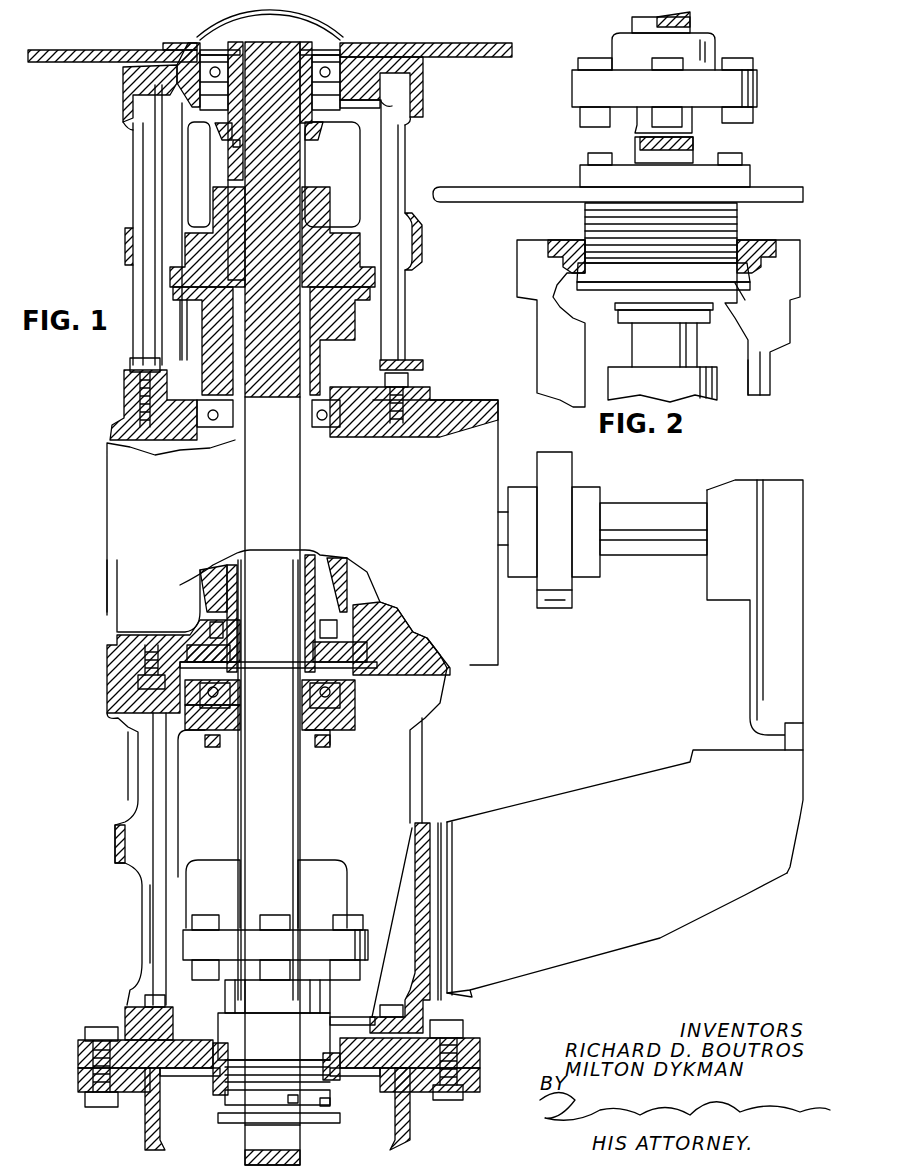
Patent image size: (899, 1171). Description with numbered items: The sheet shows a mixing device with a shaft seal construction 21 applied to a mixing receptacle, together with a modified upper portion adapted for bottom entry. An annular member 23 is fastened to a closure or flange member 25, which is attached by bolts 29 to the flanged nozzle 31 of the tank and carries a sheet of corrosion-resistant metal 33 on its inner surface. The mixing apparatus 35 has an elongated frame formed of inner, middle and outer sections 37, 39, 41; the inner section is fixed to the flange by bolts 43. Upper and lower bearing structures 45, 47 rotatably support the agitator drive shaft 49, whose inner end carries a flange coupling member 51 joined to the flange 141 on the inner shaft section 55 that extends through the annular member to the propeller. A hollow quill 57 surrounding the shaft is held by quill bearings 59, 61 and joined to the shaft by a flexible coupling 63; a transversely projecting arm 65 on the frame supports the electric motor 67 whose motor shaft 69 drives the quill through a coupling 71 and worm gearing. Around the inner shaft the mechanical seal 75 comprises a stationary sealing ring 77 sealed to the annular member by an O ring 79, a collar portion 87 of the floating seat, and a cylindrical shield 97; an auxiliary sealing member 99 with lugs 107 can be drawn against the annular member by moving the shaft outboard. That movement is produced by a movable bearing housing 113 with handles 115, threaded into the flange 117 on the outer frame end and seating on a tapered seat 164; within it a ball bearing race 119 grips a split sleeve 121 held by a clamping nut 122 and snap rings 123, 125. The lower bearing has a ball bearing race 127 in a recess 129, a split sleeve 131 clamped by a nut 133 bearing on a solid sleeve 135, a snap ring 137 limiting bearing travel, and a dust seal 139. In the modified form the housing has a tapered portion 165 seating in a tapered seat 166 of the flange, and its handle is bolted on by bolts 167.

In FIG. 1, the shaft seal construction 21 is at (203, 1093).
In FIG. 1, the annular member 23 is at (338, 1095).
In FIG. 1, the closure or flange member 25 is at (465, 1045).
In FIG. 1, the bolts 29 is at (85, 1033).
In FIG. 1, the flanged nozzle 31 is at (465, 1080).
In FIG. 1, the sheet of corrosion-resistant metal 33 is at (380, 1076).
In FIG. 1, the mixing apparatus 35 is at (438, 385).
In FIG. 1, the inner frame section 37 is at (136, 780).
In FIG. 1, the middle frame section 39 is at (105, 505).
In FIG. 1, the outer frame section 41 is at (132, 150).
In FIG. 2, the outer frame section 41 is at (765, 345).
In FIG. 1, the bolts 43 is at (142, 1010).
In FIG. 1, the upper bearing structure 45 is at (333, 116).
In FIG. 1, the lower bearing structure 47 is at (219, 753).
In FIG. 1, the agitator drive shaft 49 is at (240, 800).
In FIG. 2, the agitator drive shaft 49 is at (695, 158).
In FIG. 1, the flange coupling member 51 is at (236, 928).
In FIG. 2, the flange coupling member 51 is at (757, 100).
In FIG. 1, the inner shaft section 55 is at (246, 1150).
In FIG. 2, the inner shaft section 55 is at (692, 24).
In FIG. 1, the hollow quill 57 is at (240, 588).
In FIG. 1, the quill bearing 59 is at (348, 632).
In FIG. 1, the quill bearing 61 is at (205, 435).
In FIG. 1, the flexible coupling 63 is at (386, 287).
In FIG. 2, the flexible coupling 63 is at (736, 393).
In FIG. 1, the transversely projecting arm 65 is at (668, 770).
In FIG. 1, the electric motor 67 is at (750, 670).
In FIG. 1, the motor shaft 69 is at (672, 558).
In FIG. 1, the coupling 71 is at (552, 610).
In FIG. 1, the mechanical seal 75 is at (342, 1010).
In FIG. 1, the stationary sealing ring 77 is at (280, 1087).
In FIG. 1, the O ring 79 is at (243, 1065).
In FIG. 1, the collar portion 87 is at (274, 1036).
In FIG. 1, the cylindrical cover or shield 97 is at (232, 1025).
In FIG. 1, the sealing member 99 is at (318, 1125).
In FIG. 1, the lugs 107 is at (285, 1100).
In FIG. 1, the movable bearing housing 113 is at (218, 138).
In FIG. 2, the movable bearing housing 113 is at (585, 222).
In FIG. 1, the handles 115 is at (66, 50).
In FIG. 2, the handles 115 is at (505, 192).
In FIG. 1, the flange 117 is at (423, 80).
In FIG. 2, the flange 117 is at (760, 262).
In FIG. 1, the ball bearing race 119 is at (222, 80).
In FIG. 1, the split sleeve 121 is at (298, 44).
In FIG. 1, the clamping nut 122 is at (313, 138).
In FIG. 2, the clamping nut 122 is at (620, 318).
In FIG. 1, the snap ring 123 is at (238, 145).
In FIG. 1, the snap ring 125 is at (302, 50).
In FIG. 1, the ball bearing race 127 is at (342, 692).
In FIG. 1, the recess or chamber 129 is at (200, 690).
In FIG. 1, the split sleeve 131 is at (240, 692).
In FIG. 1, the clamping nut 133 is at (324, 750).
In FIG. 1, the solid sleeve 135 is at (240, 718).
In FIG. 1, the snap ring 137 is at (320, 667).
In FIG. 1, the dust seal 139 is at (326, 740).
In FIG. 1, the flange 141 is at (185, 952).
In FIG. 2, the flange 141 is at (757, 80).
In FIG. 1, the tapered seat 164 is at (130, 84).
In FIG. 2, the tapered seat 164 is at (738, 238).
In FIG. 2, the tapered portion 165 is at (575, 283).
In FIG. 1, the tapered seat 166 is at (385, 95).
In FIG. 2, the tapered seat 166 is at (735, 292).
In FIG. 2, the bolts 167 is at (588, 158).